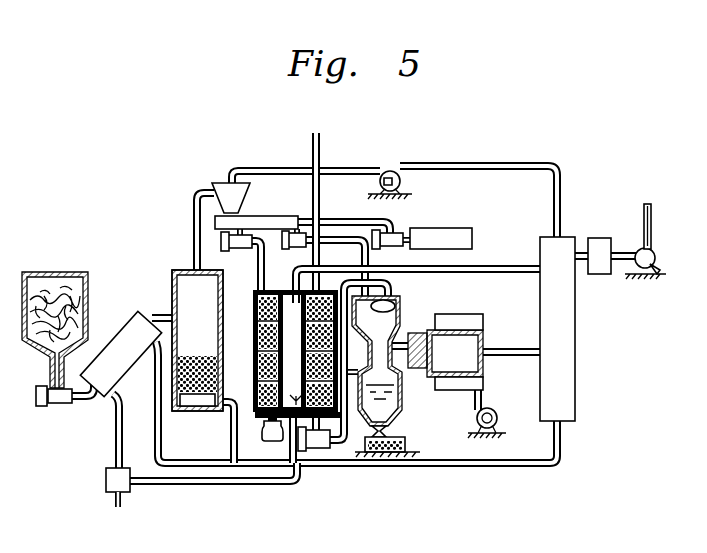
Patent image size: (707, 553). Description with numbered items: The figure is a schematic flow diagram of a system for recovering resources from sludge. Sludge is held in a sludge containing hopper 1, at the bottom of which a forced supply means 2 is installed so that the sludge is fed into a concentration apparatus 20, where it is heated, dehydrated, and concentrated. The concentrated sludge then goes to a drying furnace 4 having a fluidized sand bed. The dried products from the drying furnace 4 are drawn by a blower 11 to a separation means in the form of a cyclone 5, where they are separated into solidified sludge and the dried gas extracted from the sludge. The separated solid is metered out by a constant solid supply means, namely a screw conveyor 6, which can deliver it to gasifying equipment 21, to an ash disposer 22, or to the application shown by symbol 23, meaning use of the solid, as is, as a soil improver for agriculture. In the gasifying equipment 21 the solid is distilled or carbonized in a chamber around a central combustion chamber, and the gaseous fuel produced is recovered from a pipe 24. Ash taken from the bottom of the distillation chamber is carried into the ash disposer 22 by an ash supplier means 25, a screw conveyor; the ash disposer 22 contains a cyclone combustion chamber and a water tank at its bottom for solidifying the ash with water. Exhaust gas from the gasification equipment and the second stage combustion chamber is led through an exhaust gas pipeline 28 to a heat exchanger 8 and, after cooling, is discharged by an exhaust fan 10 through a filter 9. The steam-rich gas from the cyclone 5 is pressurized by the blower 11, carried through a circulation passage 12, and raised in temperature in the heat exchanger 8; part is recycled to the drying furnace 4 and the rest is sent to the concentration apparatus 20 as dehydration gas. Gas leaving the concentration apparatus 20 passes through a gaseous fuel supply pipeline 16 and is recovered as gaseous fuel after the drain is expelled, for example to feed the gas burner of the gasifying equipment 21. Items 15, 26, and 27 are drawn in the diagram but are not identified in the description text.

The sludge containing hopper 1 is at (80, 273).
The forced supply means 2 is at (58, 403).
The drying furnace 4 is at (184, 273).
The cyclone 5 is at (226, 186).
The screw conveyor 6 is at (258, 218).
The heat exchanger 8 is at (548, 238).
The filter 9 is at (598, 237).
The exhaust fan 10 is at (641, 245).
The blower 11 is at (398, 171).
The circulation passage 12 is at (498, 164).
The valve 15 is at (106, 480).
The gaseous fuel supply pipeline 16 is at (245, 485).
The concentration apparatus 20 is at (136, 314).
The gasifying equipment 21 is at (280, 292).
The ash disposer 22 is at (403, 298).
The soil improver application 23 is at (446, 229).
The gaseous fuel exit pipe 24 is at (312, 157).
The ash supplier means 25 is at (326, 444).
The collection tray 26 is at (400, 433).
The gas line 27 is at (514, 273).
The exhaust gas pipeline 28 is at (513, 356).